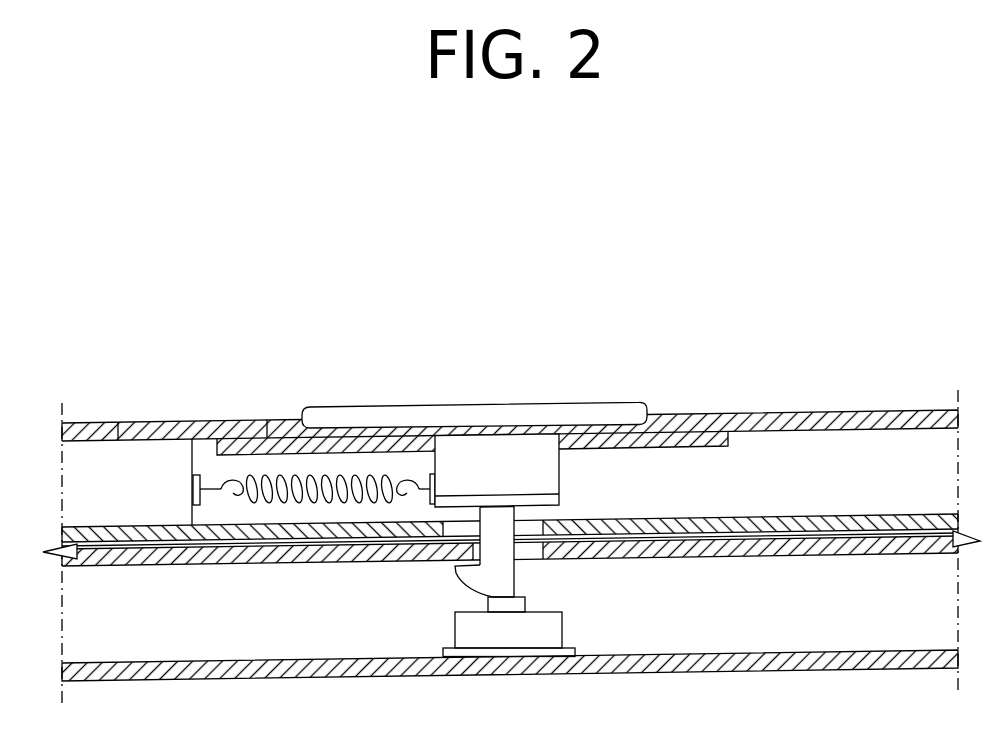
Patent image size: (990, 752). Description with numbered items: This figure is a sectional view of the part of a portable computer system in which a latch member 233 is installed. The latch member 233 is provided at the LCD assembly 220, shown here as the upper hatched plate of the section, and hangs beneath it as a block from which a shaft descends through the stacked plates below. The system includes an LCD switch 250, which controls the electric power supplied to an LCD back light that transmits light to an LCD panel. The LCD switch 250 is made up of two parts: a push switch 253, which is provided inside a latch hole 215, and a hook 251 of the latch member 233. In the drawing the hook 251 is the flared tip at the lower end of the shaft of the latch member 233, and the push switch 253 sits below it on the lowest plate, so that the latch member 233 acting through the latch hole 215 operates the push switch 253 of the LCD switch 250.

The LCD assembly 220 is at (929, 400).
The latch member 233 is at (551, 471).
The latch hole 215 is at (534, 567).
The LCD switch 250 is at (409, 582).
The hook 251 is at (463, 586).
The push switch 253 is at (464, 634).